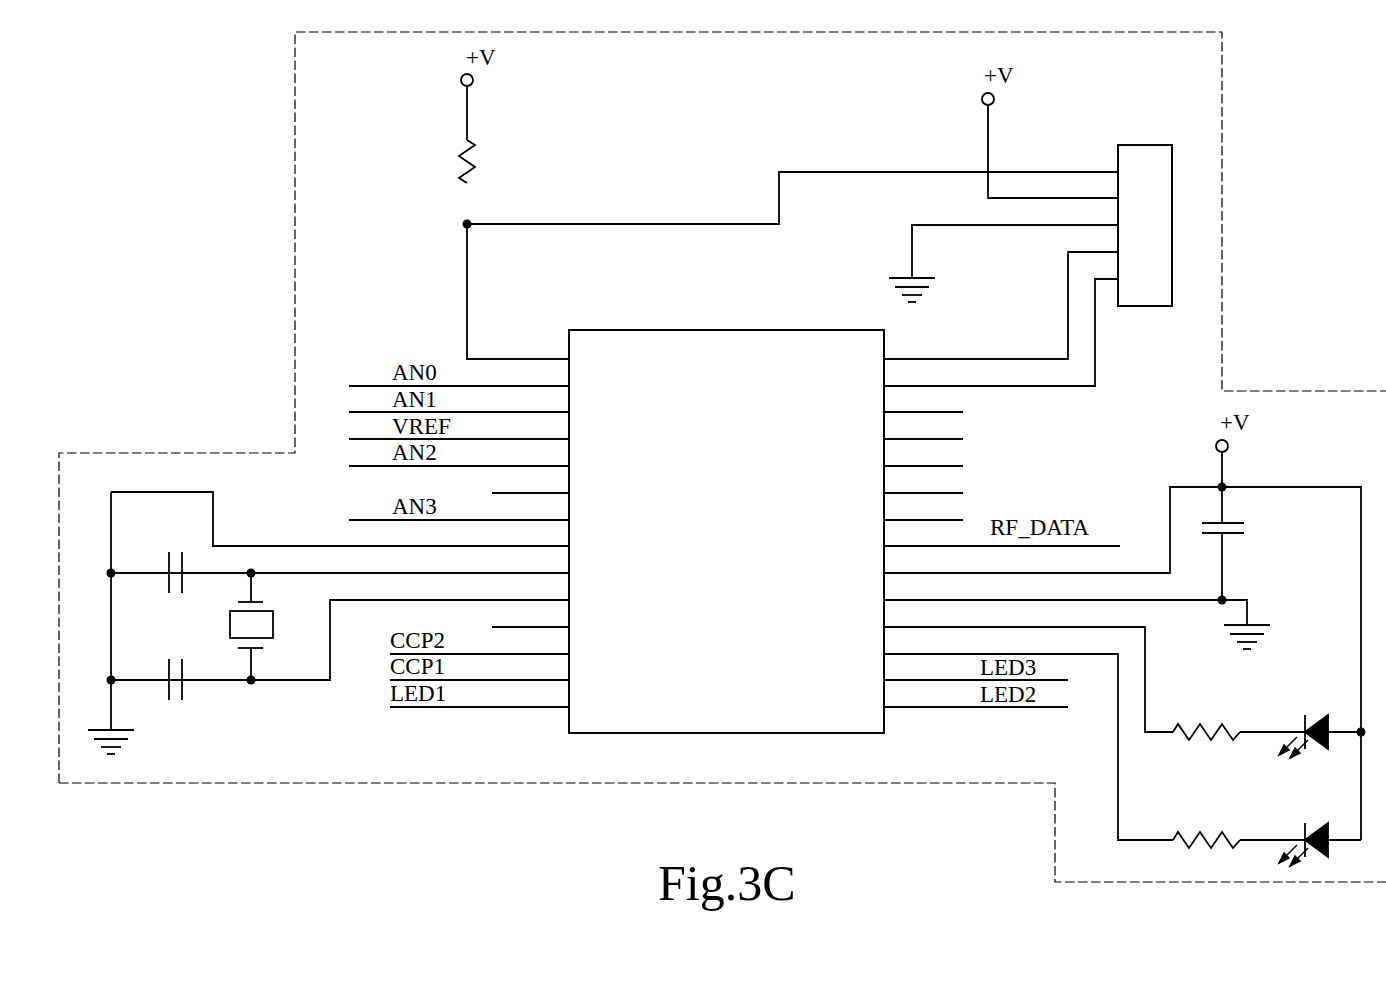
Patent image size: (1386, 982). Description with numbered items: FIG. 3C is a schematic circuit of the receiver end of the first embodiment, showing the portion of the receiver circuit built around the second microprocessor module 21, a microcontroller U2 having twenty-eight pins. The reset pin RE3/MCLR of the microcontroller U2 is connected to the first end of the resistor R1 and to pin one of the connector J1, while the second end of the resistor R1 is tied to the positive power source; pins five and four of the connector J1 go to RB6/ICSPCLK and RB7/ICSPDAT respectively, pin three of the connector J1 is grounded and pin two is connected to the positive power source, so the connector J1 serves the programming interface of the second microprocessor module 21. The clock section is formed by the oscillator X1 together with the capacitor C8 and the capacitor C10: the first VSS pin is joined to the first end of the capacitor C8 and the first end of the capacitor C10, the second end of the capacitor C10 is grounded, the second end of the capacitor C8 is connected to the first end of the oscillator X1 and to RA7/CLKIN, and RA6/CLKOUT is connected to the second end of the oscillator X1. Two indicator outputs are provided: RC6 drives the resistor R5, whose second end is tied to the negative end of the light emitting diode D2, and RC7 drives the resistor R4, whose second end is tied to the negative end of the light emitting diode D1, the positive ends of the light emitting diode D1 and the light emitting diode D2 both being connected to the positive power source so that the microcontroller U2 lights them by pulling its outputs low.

The second microprocessor module 21 is at (295, 243).
The microcontroller U2 is at (726, 517).
The resistor R1 is at (489, 161).
The connector J1 is at (1145, 212).
The capacitor C8 is at (175, 589).
The capacitor C10 is at (170, 697).
The oscillator X1 is at (271, 625).
The resistor R4 is at (1206, 718).
The resistor R5 is at (1206, 826).
The light emitting diode D1 is at (1265, 637).
The light emitting diode D2 is at (1303, 834).